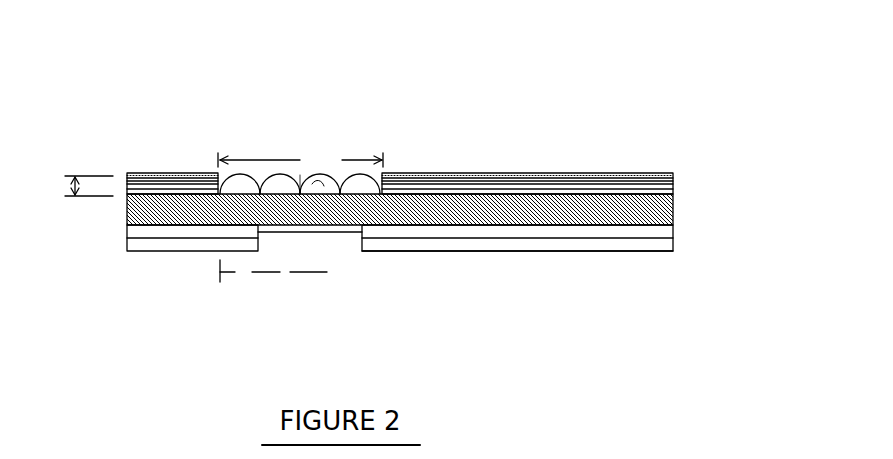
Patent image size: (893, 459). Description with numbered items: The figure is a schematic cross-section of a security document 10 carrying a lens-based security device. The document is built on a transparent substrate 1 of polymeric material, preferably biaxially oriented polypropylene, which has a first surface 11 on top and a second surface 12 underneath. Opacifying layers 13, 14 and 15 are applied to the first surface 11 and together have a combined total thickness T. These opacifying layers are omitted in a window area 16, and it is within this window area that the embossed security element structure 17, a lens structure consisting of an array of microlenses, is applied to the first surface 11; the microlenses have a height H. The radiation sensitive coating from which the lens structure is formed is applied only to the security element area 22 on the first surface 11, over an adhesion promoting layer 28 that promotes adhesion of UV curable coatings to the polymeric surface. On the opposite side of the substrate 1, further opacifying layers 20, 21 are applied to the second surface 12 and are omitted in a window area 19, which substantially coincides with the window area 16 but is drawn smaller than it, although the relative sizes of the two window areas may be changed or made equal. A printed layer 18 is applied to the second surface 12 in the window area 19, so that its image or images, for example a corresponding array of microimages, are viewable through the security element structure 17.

The security document 10 is at (405, 175).
The first surface 11 is at (673, 176).
The opacifying layer 15 is at (558, 175).
The opacifying layer 14 is at (575, 180).
The opacifying layer 13 is at (603, 178).
The substrate 1 is at (675, 207).
The second surface 12 is at (436, 270).
The printed layer 18 is at (290, 233).
The opacifying layer 20 is at (502, 238).
The opacifying layer 21 is at (575, 252).
The window area 16 is at (315, 134).
The security element structure 17 is at (280, 172).
The adhesion promoting layer 28 is at (347, 185).
The security element area 22 is at (360, 160).
The height H is at (308, 186).
The combined total thickness T is at (90, 172).
The window area 19 is at (302, 275).